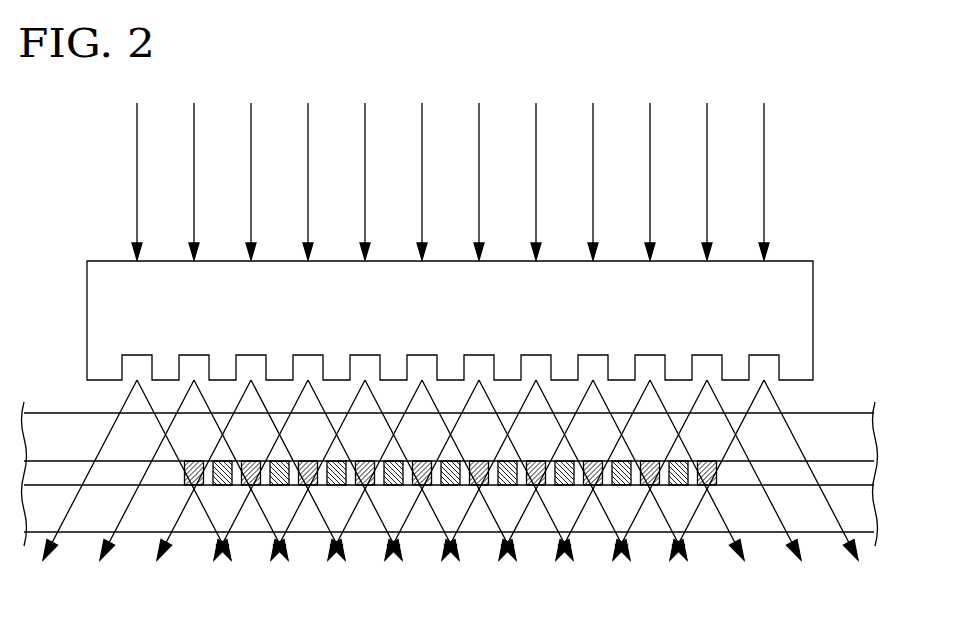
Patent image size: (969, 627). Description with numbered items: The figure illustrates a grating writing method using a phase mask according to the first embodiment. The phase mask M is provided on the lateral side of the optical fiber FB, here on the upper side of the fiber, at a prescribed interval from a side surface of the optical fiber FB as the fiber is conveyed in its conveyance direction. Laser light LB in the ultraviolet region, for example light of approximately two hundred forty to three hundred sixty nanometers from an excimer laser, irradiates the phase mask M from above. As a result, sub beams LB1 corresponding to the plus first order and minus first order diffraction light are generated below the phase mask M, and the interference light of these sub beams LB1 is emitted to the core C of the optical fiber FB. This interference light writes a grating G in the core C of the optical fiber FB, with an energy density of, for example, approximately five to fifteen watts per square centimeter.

The laser light LB is at (765, 175).
The phase mask M is at (797, 318).
The optical fiber FB is at (848, 399).
The core C is at (860, 474).
The grating G is at (170, 482).
The sub beams LB1 is at (72, 510).